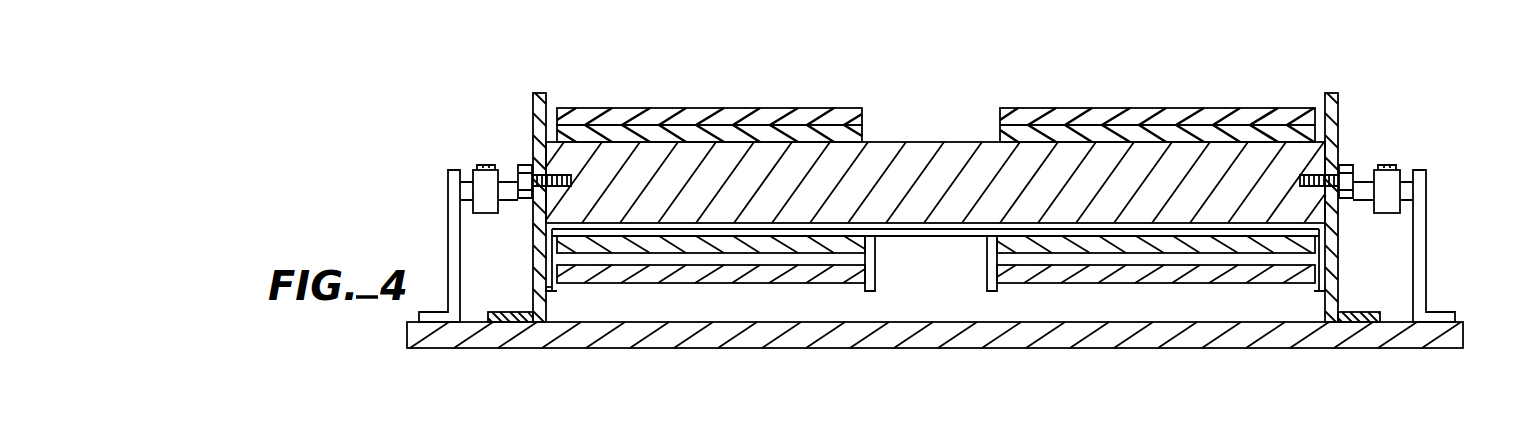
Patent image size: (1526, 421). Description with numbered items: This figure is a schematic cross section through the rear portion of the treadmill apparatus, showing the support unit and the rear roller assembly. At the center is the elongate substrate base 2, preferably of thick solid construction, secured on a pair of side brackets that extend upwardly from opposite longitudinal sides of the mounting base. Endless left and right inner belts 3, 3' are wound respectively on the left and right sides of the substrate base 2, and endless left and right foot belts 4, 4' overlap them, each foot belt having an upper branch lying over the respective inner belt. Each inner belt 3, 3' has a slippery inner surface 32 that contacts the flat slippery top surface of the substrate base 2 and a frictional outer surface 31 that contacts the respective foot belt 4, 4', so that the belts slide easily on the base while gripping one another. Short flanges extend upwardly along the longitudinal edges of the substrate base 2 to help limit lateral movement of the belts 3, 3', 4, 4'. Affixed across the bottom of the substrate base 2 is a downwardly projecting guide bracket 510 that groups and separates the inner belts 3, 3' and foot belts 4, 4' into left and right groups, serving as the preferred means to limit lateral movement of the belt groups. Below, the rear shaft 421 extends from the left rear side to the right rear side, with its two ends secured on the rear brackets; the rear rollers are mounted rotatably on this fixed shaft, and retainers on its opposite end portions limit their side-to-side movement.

The substrate base 2 is at (1037, 158).
The left inner belt 3 is at (709, 100).
The left foot belt 4 is at (709, 91).
The right inner belt 3' is at (1157, 100).
The right foot belt 4' is at (1157, 92).
The frictional outer surface 31 is at (1242, 148).
The slippery inner surface 32 is at (1248, 150).
The guide bracket 510 is at (552, 289).
The rear shaft 421 is at (1405, 185).